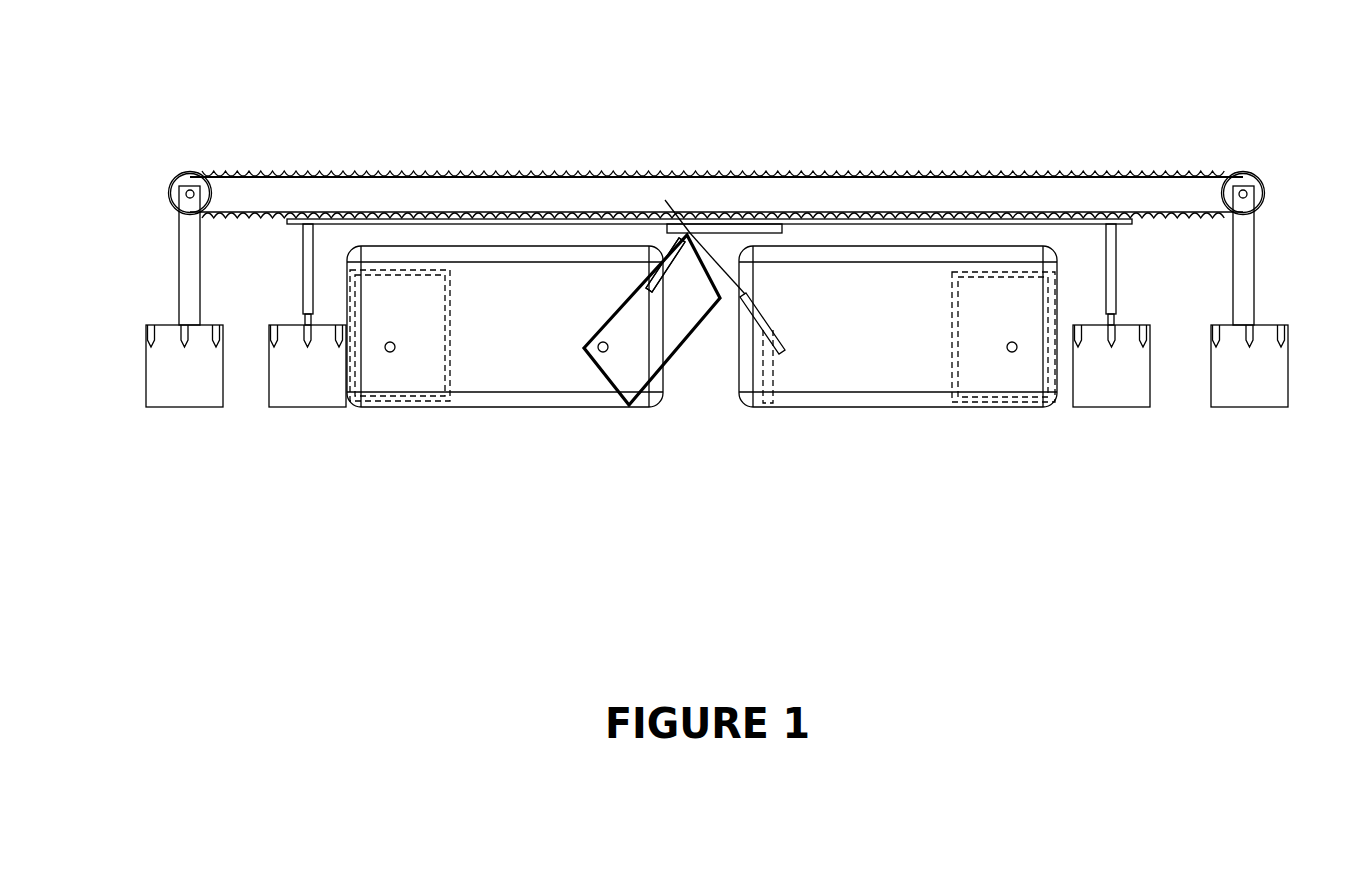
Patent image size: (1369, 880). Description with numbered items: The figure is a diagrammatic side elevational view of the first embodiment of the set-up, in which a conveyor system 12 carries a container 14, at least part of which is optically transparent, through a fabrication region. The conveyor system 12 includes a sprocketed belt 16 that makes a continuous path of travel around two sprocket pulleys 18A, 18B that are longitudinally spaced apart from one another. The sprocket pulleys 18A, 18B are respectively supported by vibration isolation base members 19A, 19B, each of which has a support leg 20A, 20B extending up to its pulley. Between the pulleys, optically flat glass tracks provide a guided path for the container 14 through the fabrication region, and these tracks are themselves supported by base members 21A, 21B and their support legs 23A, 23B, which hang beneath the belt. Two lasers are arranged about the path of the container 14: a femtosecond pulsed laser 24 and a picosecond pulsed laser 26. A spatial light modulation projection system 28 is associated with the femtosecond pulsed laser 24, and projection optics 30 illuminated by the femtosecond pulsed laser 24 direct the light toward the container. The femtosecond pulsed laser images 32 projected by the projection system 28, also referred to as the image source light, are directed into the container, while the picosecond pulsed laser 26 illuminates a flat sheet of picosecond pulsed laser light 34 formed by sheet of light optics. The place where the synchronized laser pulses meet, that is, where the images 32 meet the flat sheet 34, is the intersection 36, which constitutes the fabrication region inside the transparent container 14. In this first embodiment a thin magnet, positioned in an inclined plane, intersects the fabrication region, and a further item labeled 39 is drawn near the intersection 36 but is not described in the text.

The conveyor system 12 is at (370, 172).
The container 14 is at (713, 227).
The sprocketed belt 16 is at (280, 222).
The sprocket pulley 18A is at (180, 175).
The sprocket pulley 18B is at (1260, 175).
The vibration isolation base member 19A is at (175, 395).
The vibration isolation base member 19B is at (1258, 395).
The support leg 20A is at (187, 283).
The support leg 20B is at (1242, 308).
The base member 21A is at (328, 395).
The base member 21B is at (1122, 395).
The support leg 23A is at (308, 265).
The support leg 23B is at (1110, 305).
The femtosecond pulsed laser 24 is at (505, 287).
The picosecond pulsed laser 26 is at (905, 288).
The spatial light modulation projection system 28 is at (682, 318).
The projection optics 30 is at (668, 250).
The femtosecond pulsed laser images 32 is at (690, 232).
The flat sheet of picosecond pulsed laser light 34 is at (730, 240).
The intersection 36 is at (698, 232).
The flap mount 39 is at (672, 238).